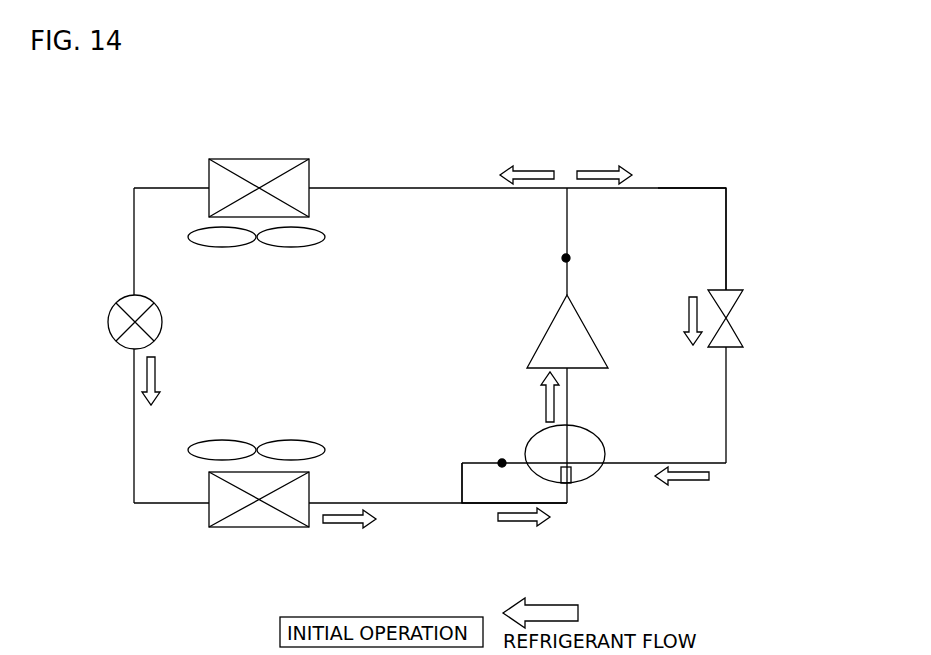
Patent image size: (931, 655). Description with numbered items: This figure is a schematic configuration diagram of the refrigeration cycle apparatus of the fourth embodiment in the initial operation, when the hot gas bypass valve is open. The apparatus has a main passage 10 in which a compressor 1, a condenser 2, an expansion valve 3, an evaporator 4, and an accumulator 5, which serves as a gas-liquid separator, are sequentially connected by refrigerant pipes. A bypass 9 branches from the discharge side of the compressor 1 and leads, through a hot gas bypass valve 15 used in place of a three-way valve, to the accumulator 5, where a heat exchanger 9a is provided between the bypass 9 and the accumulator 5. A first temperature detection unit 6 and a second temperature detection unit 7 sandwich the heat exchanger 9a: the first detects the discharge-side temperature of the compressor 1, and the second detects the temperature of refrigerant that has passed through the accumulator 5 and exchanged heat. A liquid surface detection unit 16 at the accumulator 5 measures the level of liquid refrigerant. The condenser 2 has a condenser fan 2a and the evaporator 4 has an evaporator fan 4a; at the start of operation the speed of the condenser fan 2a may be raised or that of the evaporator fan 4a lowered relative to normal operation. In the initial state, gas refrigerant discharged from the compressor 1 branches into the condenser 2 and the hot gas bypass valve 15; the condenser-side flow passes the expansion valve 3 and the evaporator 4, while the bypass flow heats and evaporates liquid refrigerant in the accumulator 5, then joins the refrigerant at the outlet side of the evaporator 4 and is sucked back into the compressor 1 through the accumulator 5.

The compressor 1 is at (585, 326).
The condenser 2 is at (272, 159).
The condenser fan 2a is at (283, 247).
The expansion valve 3 is at (162, 320).
The evaporator 4 is at (262, 527).
The evaporator fan 4a is at (225, 440).
The accumulator 5 is at (598, 432).
The first temperature detection unit 6 is at (570, 257).
The second temperature detection unit 7 is at (500, 466).
The bypass 9 is at (658, 188).
The heat exchanger 9a is at (547, 467).
The main passage 10 is at (383, 187).
The hot gas bypass valve 15 is at (726, 318).
The liquid surface detection unit 16 is at (571, 472).